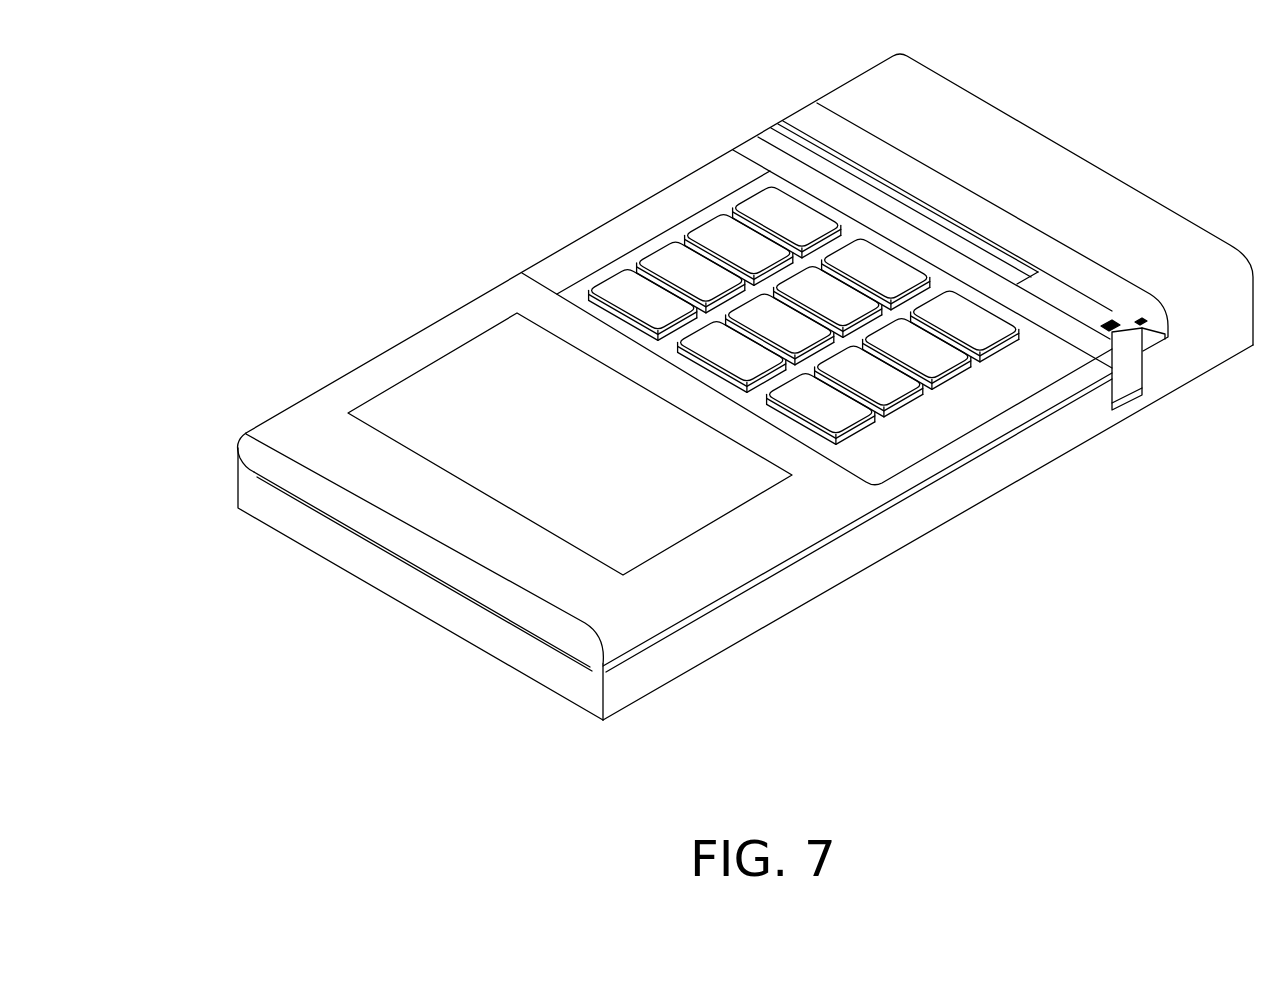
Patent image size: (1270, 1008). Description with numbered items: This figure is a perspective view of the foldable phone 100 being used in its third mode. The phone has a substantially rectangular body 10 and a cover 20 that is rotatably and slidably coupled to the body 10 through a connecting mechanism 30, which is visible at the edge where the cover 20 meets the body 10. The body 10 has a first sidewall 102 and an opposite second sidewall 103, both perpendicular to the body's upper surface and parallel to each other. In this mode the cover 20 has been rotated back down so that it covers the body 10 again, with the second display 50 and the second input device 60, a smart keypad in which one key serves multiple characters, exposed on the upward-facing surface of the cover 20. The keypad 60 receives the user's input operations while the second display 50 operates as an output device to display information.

The foldable phone 100 is at (406, 163).
The body 10 is at (342, 548).
The cover 20 is at (335, 445).
The connecting mechanism 30 is at (1128, 373).
The second display 50 is at (455, 390).
The second input device 60 is at (627, 297).
The first sidewall 102 is at (884, 532).
The second sidewall 103 is at (236, 479).